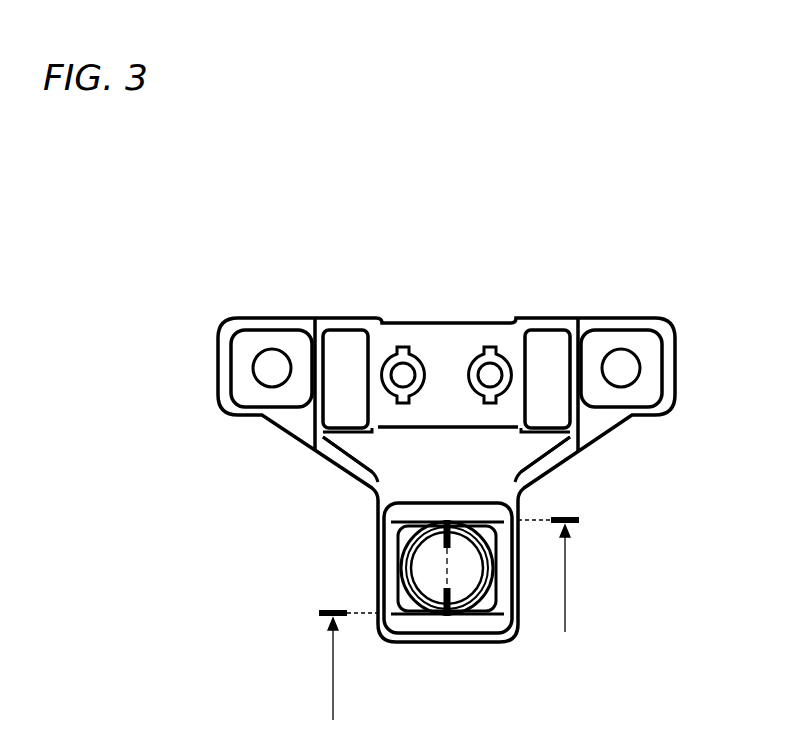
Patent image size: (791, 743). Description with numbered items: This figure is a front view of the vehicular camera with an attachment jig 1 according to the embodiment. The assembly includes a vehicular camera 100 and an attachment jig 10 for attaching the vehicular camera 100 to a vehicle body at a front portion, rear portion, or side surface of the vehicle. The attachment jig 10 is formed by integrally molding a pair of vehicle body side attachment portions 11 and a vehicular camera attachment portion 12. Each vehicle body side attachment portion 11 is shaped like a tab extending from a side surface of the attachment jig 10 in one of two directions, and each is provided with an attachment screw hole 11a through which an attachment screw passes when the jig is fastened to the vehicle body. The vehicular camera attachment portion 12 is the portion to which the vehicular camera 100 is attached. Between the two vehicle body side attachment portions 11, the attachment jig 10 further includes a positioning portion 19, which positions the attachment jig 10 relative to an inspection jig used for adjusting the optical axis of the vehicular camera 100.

The vehicular camera with an attachment jig 1 is at (668, 263).
The attachment jig 10 is at (550, 318).
The vehicle body side attachment portion 11 is at (218, 362).
The attachment screw hole 11a is at (272, 368).
The vehicular camera attachment portion 12 is at (518, 575).
The positioning portion 19 is at (484, 347).
The vehicular camera 100 is at (378, 548).